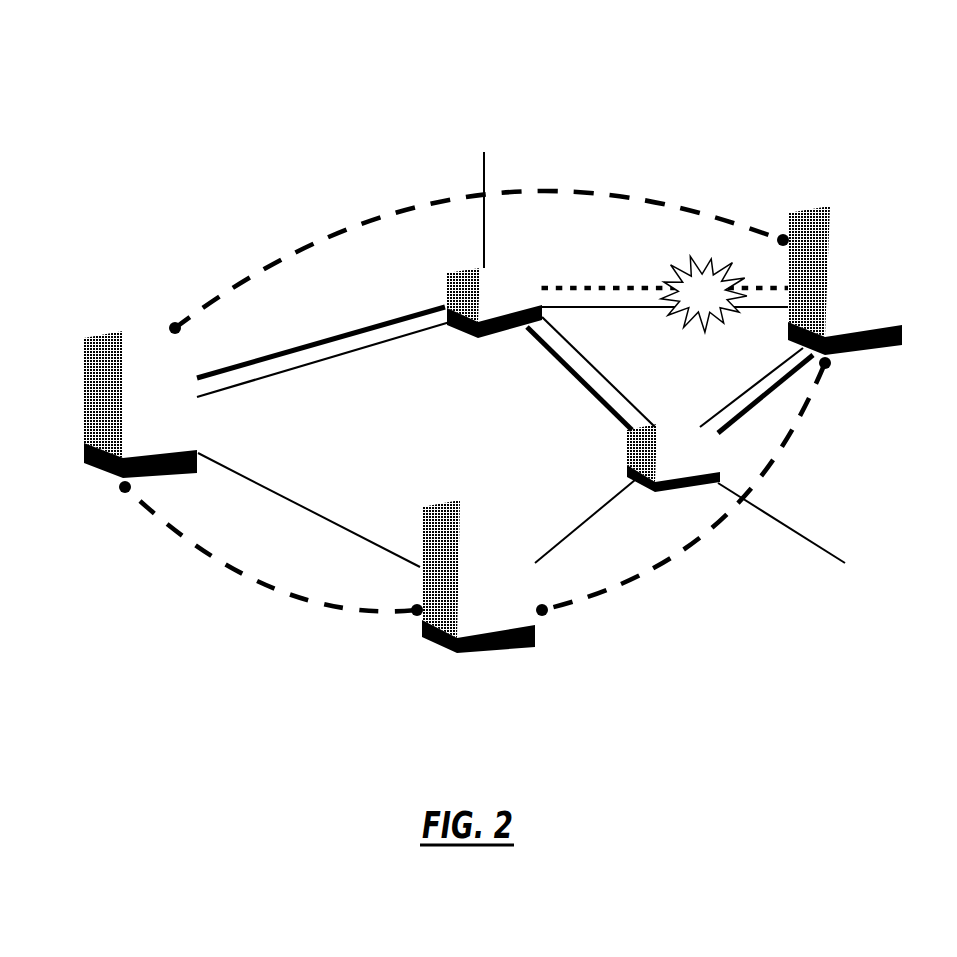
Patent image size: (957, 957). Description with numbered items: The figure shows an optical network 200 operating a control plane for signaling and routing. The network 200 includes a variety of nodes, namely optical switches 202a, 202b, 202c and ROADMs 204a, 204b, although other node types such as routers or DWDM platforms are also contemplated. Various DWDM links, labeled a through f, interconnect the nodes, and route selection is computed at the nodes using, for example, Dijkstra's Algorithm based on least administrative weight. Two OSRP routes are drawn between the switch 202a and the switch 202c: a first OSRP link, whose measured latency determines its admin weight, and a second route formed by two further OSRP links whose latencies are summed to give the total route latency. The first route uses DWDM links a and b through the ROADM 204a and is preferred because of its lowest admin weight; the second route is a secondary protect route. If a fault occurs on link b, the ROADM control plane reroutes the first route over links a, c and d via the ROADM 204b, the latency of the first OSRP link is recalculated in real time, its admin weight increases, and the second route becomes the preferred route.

The optical network 200 is at (612, 60).
The optical switch 202a is at (193, 343).
The optical switch 202b is at (458, 520).
The optical switch 202c is at (850, 216).
The ROADM 204a is at (500, 272).
The ROADM 204b is at (662, 435).